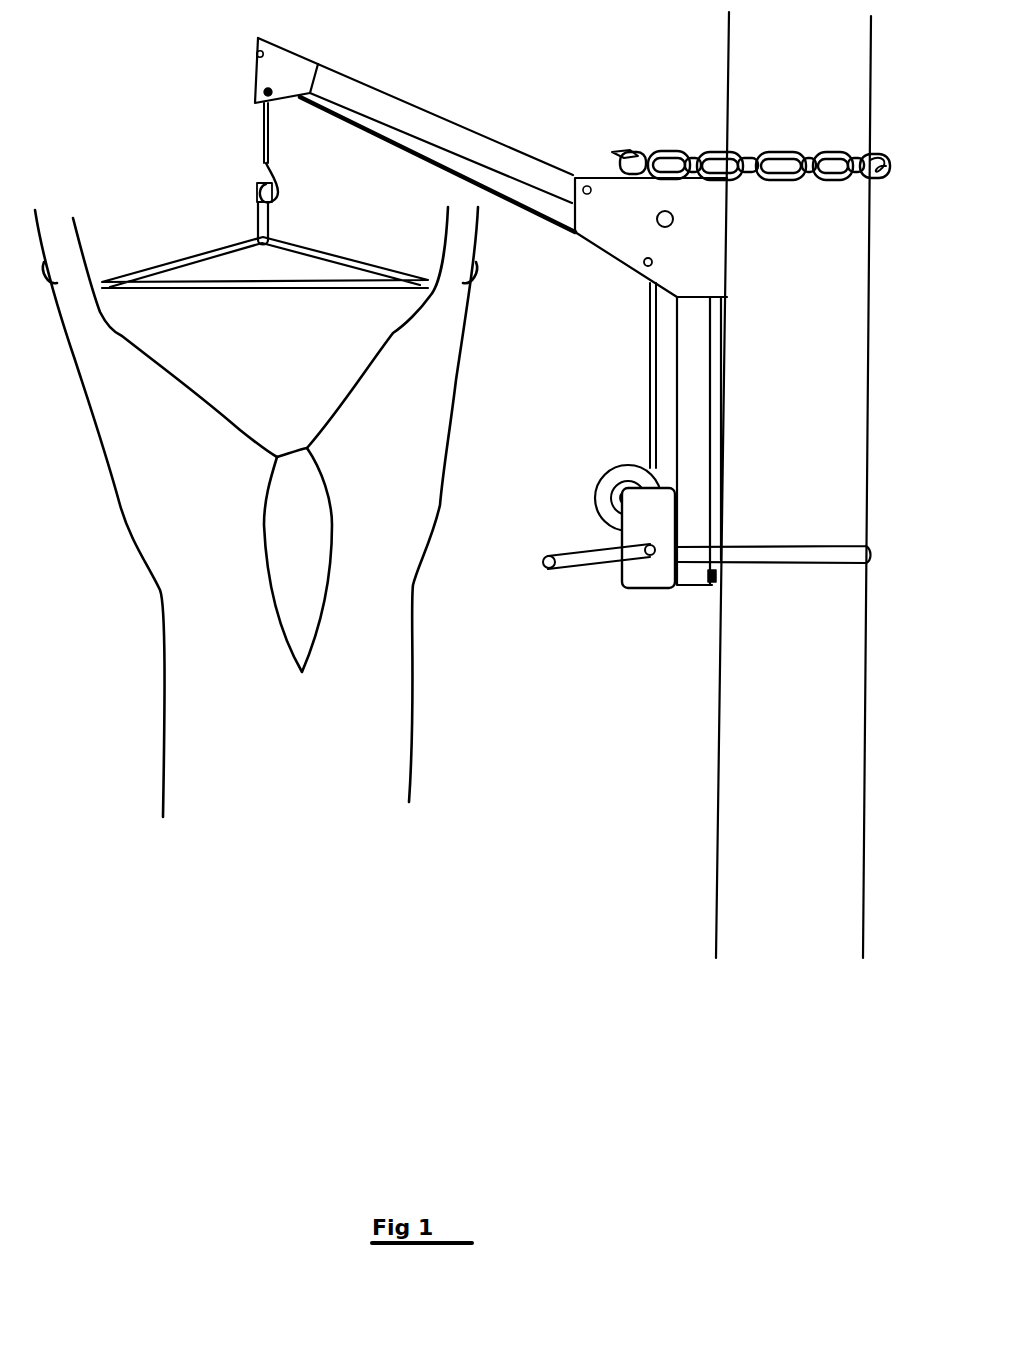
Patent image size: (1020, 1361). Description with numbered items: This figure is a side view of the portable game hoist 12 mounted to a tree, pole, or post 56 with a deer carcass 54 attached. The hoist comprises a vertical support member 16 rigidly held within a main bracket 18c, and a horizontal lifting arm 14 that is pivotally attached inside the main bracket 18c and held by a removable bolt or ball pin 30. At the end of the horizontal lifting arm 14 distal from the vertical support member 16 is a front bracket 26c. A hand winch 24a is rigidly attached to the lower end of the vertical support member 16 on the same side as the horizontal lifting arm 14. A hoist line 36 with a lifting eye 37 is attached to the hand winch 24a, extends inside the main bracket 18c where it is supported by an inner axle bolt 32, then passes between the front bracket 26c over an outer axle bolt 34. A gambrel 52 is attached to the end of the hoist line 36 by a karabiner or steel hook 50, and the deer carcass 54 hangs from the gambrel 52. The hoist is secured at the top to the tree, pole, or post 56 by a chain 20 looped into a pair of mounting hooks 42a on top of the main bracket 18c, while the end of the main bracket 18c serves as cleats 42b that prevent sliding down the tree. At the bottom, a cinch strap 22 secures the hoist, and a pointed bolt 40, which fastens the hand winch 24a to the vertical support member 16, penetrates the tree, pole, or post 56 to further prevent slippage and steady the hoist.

The portable game hoist 12 is at (507, 102).
The horizontal lifting arm 14 is at (408, 121).
The vertical support member 16 is at (690, 412).
The main bracket 18c is at (672, 268).
The chain 20 is at (710, 150).
The cinch strap 22 is at (820, 554).
The hand winch 24a is at (636, 522).
The front bracket 26c is at (260, 70).
The ball pin 30 is at (656, 220).
The inner axle bolt 32 is at (646, 262).
The outer axle bolt 34 is at (262, 93).
The hoist line 36 is at (652, 370).
The lifting eye 37 is at (258, 193).
The pointed bolt 40 is at (712, 582).
The mounting hooks 42a is at (638, 150).
The cleats 42b is at (727, 190).
The karabiner or steel hook 50 is at (265, 232).
The gambrel 52 is at (163, 265).
The deer carcass 54 is at (202, 537).
The tree, pole, or post 56 is at (765, 52).